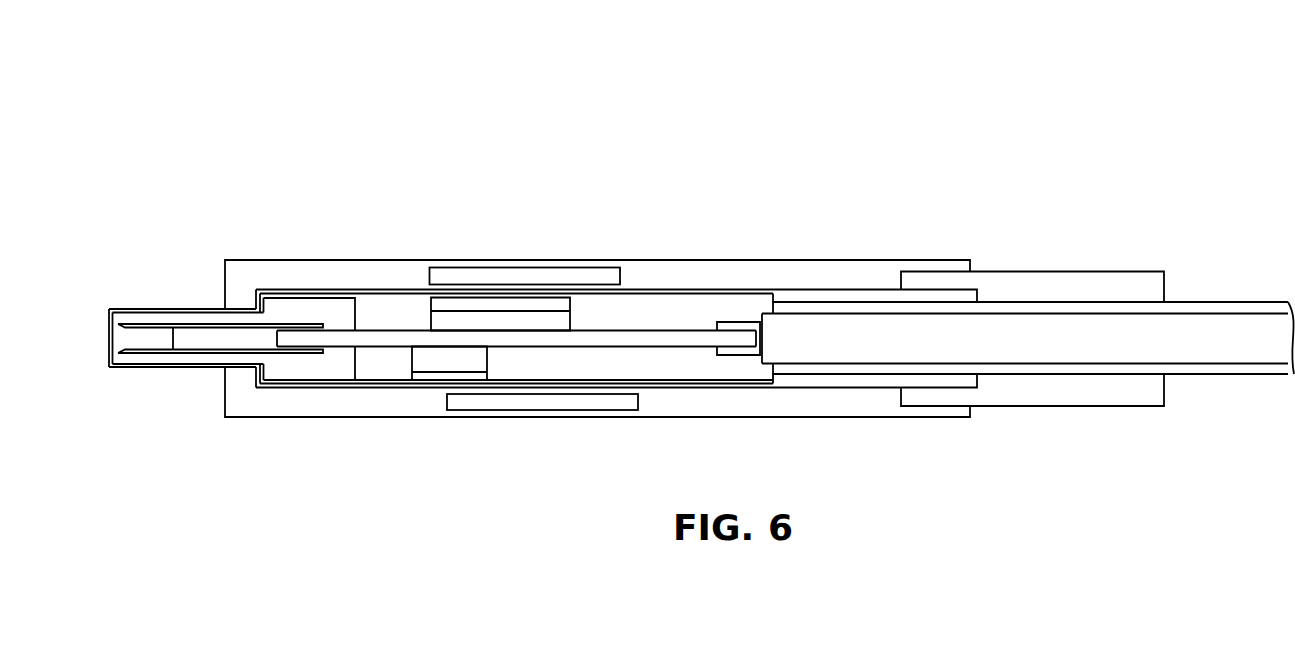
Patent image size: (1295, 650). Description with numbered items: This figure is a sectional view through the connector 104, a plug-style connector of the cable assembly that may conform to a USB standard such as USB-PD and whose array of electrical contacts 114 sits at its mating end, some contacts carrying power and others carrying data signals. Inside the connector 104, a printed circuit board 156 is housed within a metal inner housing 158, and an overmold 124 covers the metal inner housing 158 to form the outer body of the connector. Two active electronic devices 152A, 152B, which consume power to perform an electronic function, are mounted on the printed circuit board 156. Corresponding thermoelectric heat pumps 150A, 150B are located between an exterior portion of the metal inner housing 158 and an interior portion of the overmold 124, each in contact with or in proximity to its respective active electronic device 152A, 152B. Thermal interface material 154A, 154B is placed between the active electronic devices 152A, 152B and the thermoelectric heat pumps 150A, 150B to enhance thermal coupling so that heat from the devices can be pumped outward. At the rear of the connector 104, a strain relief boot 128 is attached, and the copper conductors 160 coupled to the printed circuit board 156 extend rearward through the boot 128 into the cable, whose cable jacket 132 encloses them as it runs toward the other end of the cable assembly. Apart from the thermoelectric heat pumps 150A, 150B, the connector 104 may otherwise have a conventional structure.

The first connector 104 is at (339, 106).
The electrical contacts 114 is at (159, 353).
The overmold 124 is at (693, 260).
The strain relief boot 128 is at (1026, 271).
The cable jacket 132 is at (1202, 374).
The thermoelectric heat pump 150A is at (520, 267).
The thermoelectric heat pump 150B is at (561, 411).
The active electronic device 152A is at (430, 322).
The active electronic device 152B is at (412, 358).
The thermal interface material 154A is at (429, 302).
The thermal interface material 154B is at (407, 373).
The printed circuit board 156 is at (655, 347).
The metal inner housing 158 is at (850, 388).
The copper conductors 160 is at (1256, 313).